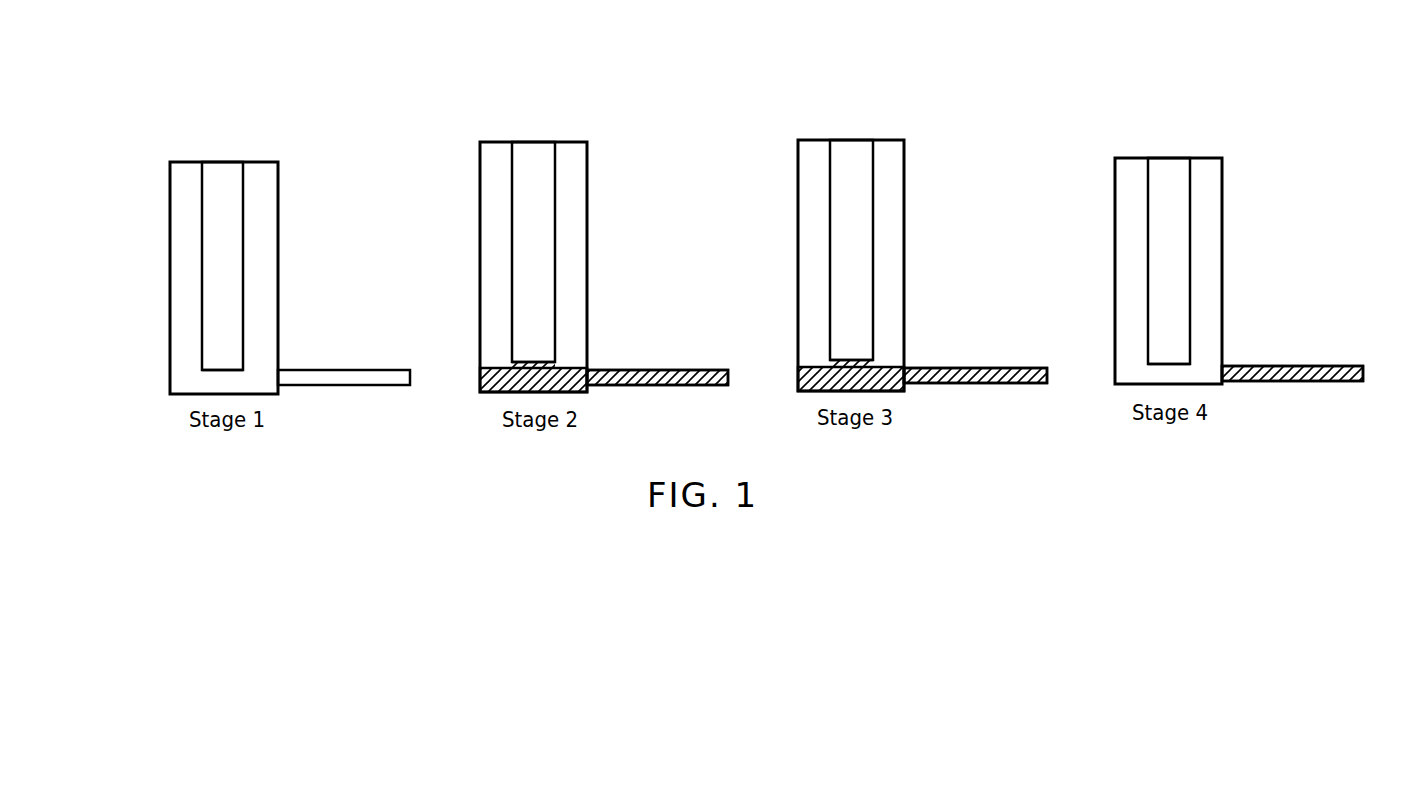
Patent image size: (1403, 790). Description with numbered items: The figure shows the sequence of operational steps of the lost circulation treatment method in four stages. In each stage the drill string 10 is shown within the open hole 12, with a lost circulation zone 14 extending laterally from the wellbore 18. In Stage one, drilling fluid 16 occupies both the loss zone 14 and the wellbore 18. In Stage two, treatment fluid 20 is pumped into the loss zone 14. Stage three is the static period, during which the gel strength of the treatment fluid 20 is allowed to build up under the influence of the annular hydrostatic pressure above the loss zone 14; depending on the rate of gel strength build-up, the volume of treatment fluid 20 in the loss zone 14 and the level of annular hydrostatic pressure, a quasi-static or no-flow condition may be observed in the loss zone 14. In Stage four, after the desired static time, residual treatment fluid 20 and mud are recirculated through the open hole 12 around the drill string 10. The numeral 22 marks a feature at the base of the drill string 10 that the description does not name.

The drill string 10 is at (220, 175).
The open hole 12 is at (277, 233).
The lost circulation zone 14 is at (363, 372).
The drilling fluid 16 is at (252, 308).
The wellbore 18 is at (209, 128).
The treatment fluid 20 is at (488, 383).
The core bottom interface 22 is at (223, 365).